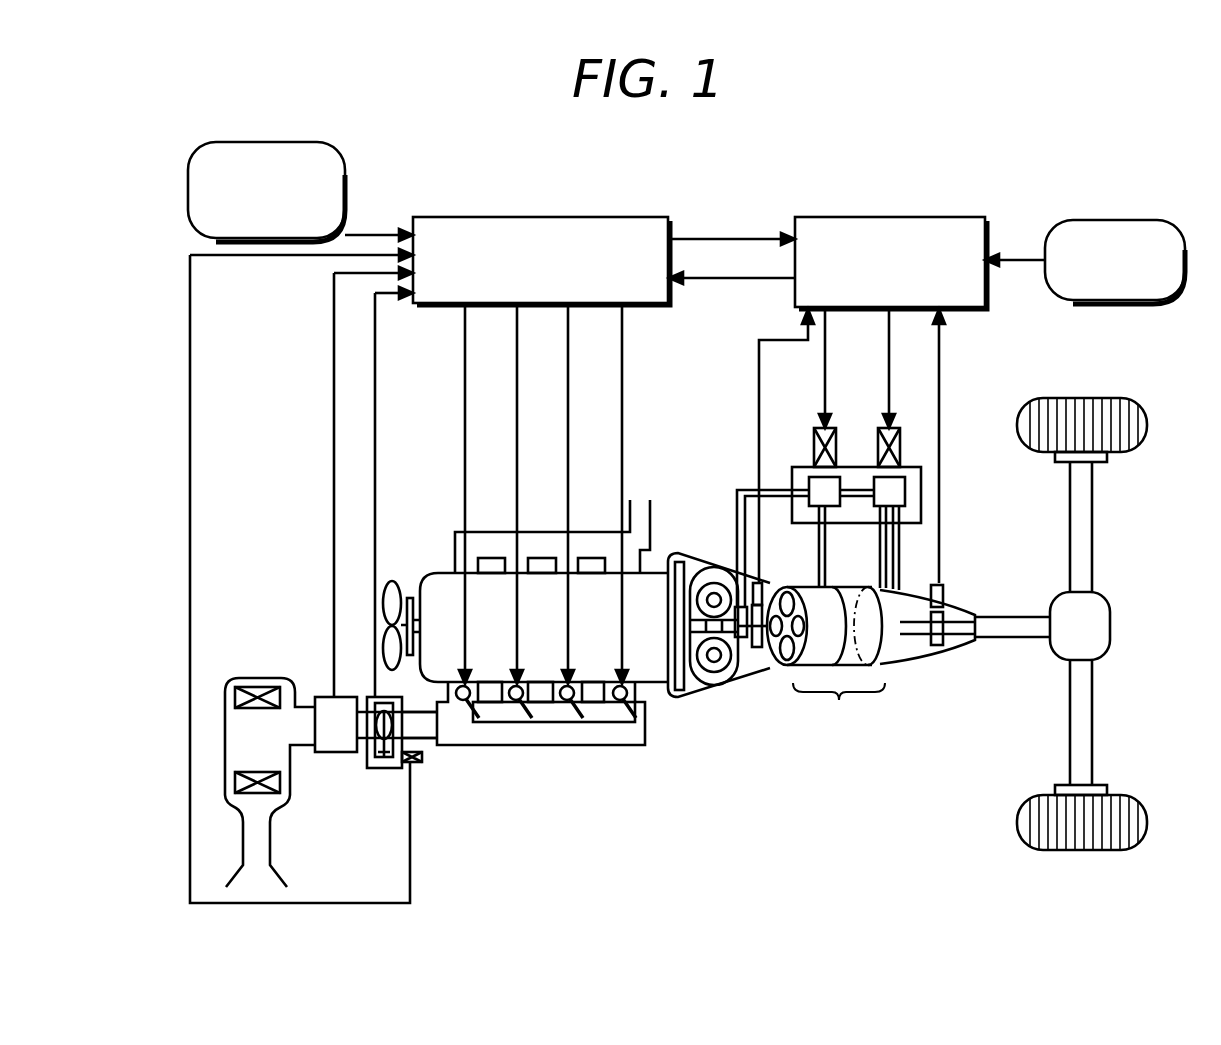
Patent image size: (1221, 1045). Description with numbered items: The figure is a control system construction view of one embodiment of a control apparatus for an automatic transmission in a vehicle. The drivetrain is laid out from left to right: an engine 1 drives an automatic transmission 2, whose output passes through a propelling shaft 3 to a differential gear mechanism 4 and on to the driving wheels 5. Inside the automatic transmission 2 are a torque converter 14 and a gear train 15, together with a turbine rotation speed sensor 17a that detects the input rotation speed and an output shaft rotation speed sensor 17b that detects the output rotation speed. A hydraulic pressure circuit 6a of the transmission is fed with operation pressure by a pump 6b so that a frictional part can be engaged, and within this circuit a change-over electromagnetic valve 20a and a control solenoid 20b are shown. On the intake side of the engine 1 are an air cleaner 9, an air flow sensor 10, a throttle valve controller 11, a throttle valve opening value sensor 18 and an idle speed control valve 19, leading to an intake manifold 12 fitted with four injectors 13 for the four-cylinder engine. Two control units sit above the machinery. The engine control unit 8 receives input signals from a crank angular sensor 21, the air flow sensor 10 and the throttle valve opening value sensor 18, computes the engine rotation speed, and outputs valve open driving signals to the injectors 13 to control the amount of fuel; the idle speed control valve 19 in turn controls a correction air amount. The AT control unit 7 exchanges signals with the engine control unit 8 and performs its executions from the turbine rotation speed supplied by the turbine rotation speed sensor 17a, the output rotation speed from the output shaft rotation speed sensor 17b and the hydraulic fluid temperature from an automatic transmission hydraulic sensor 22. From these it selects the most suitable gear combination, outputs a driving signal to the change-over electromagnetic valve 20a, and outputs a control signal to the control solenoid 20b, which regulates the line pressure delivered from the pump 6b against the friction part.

The engine 1 is at (672, 678).
The automatic transmission 2 is at (912, 652).
The propelling shaft 3 is at (1026, 632).
The differential gear mechanism 4 is at (1112, 612).
The driving wheels 5 is at (1136, 408).
The hydraulic pressure circuit 6a is at (918, 492).
The pump 6b is at (757, 650).
The control unit (ATCU) 7 is at (923, 215).
The control unit (ECU) 8 is at (578, 215).
The air cleaner 9 is at (256, 682).
The air flow sensor 10 is at (330, 753).
The throttle valve controller 11 is at (381, 760).
The intake manifold 12 is at (622, 740).
The injectors 13 is at (660, 765).
The torque converter 14 is at (716, 660).
The gear train 15 is at (839, 712).
The turbine rotation speed sensor 17a is at (762, 594).
The output shaft rotation speed sensor 17b is at (944, 594).
The throttle valve opening value sensor 18 is at (367, 698).
The idle speed control valve (ISC valve) 19 is at (424, 765).
The change-over electromagnetic valve 20a is at (903, 450).
The control solenoid 20b is at (812, 448).
The crank angular sensor 21 is at (342, 154).
The automatic transmission hydraulic sensor (ATF sensor) 22 is at (1168, 218).